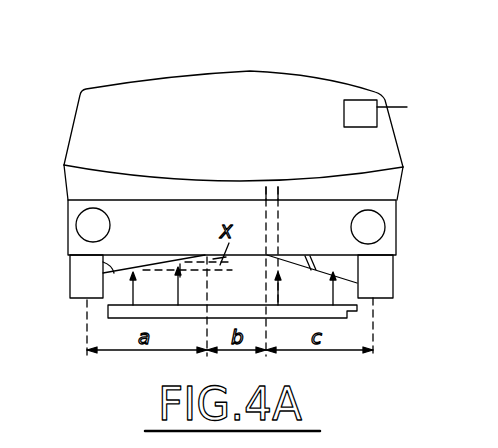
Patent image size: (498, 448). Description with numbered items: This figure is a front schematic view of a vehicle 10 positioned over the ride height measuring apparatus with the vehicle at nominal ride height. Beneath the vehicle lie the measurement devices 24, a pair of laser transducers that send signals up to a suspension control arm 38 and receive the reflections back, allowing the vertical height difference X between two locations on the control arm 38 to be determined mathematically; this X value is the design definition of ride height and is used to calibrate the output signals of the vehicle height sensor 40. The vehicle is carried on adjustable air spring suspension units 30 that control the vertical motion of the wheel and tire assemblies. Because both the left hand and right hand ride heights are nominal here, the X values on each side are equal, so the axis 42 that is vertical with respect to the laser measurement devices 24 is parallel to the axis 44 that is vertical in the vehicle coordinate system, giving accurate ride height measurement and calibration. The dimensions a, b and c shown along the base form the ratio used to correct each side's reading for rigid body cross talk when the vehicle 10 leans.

The vehicle 10 is at (160, 85).
The measurement devices 24 is at (348, 318).
The adjustable air spring suspension units 30 is at (112, 272).
The suspension control arm 38 is at (350, 278).
The vehicle height sensor 40 is at (147, 270).
The axis vertical with respect to laser measurement devices 42 is at (266, 190).
The axis vertical in the vehicle coordinate system 44 is at (278, 192).